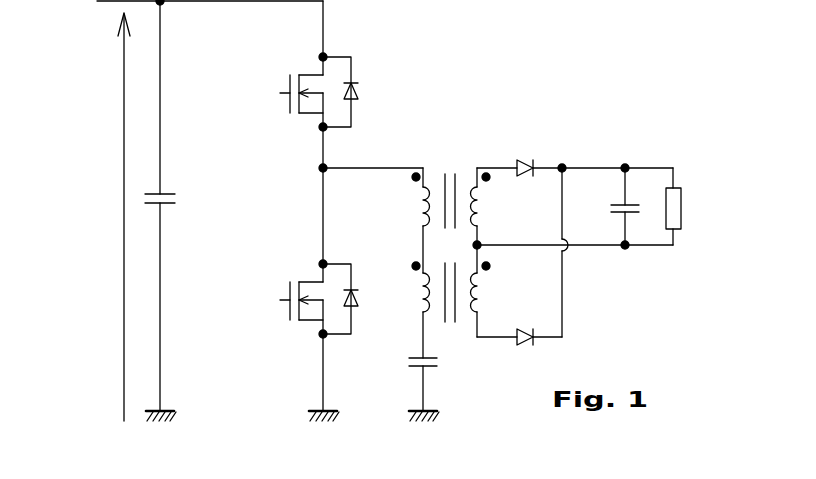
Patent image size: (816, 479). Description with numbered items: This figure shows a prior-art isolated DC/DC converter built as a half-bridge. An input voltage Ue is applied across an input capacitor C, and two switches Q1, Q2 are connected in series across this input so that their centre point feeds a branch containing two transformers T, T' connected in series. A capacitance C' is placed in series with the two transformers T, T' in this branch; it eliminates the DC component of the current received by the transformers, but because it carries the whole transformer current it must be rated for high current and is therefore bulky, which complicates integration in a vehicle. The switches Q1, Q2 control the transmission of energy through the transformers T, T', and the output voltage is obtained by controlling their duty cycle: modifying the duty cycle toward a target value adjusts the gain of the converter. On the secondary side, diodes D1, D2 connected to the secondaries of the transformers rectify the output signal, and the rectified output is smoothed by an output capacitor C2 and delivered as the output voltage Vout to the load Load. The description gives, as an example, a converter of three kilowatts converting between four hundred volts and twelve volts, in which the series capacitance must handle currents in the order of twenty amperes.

The input voltage Ue is at (108, 217).
The input capacitor C is at (171, 211).
The switch Q1 is at (299, 92).
The switch Q2 is at (290, 299).
The transformer T is at (406, 207).
The transformer T' is at (451, 302).
The capacitance C' is at (413, 366).
The first rectifier diode D1 is at (519, 153).
The second rectifier diode D2 is at (522, 270).
The output capacitor C2 is at (608, 206).
The load Load is at (701, 206).
The output voltage Vout is at (623, 155).